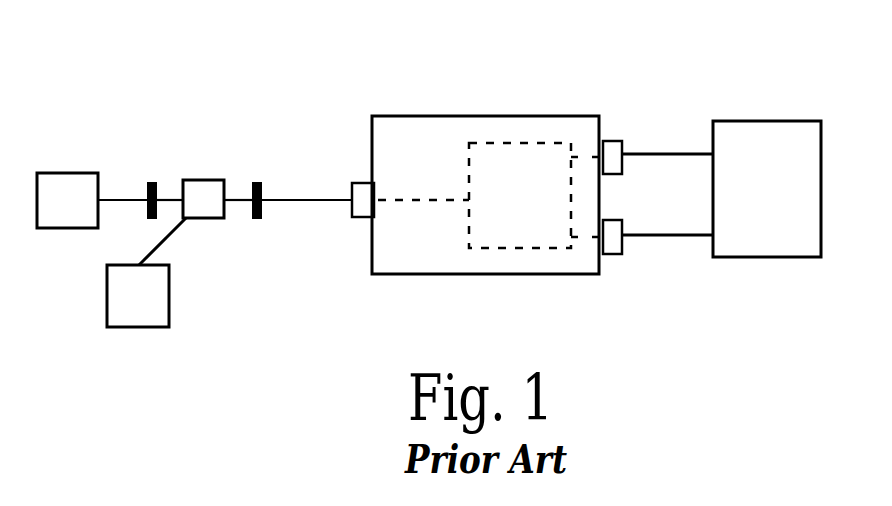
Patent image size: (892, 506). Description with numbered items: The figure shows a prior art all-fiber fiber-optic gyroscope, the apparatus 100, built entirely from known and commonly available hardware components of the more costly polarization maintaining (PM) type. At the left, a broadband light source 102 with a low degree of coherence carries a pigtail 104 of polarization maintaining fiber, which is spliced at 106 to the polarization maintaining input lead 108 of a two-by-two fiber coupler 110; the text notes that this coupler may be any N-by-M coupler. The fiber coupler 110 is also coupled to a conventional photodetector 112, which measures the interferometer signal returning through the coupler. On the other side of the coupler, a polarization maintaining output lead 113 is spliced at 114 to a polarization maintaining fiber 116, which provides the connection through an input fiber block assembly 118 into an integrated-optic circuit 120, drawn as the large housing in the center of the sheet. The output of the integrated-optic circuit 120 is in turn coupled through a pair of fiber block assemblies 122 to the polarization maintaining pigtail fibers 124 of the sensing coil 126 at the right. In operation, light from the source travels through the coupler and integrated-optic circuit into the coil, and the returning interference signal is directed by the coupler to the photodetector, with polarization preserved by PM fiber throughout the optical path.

The apparatus 100 is at (400, 50).
The broadband light source 102 is at (63, 173).
The pigtail 104 is at (126, 201).
The splice 106 is at (152, 182).
The polarization maintaining input lead 108 is at (166, 196).
The fiber coupler 110 is at (215, 180).
The photodetector 112 is at (135, 328).
The polarization maintaining output lead 113 is at (232, 201).
The splice 114 is at (259, 182).
The polarization maintaining fiber 116 is at (306, 201).
The input fiber block assembly 118 is at (353, 183).
The integrated-optic circuit 120 is at (463, 115).
The fiber block assemblies 122 is at (622, 140).
The polarization maintaining pigtail fibers 124 is at (672, 153).
The coil 126 is at (727, 120).